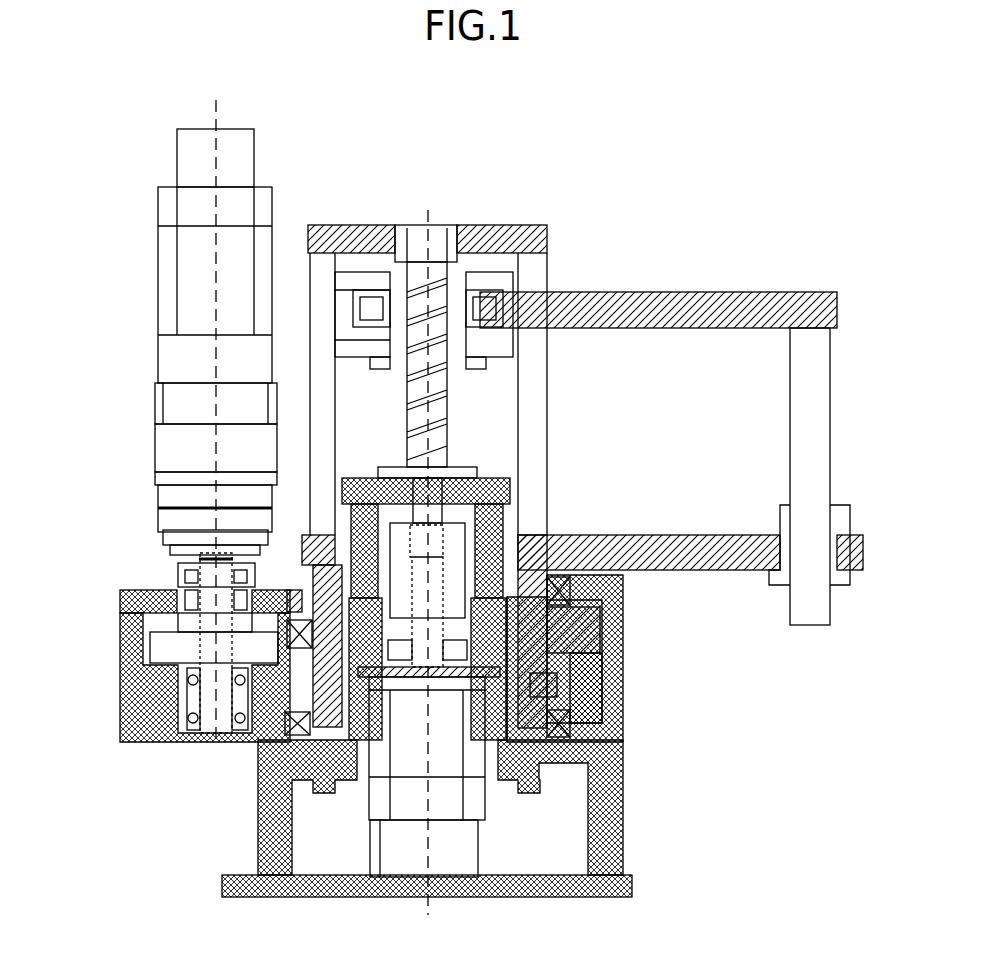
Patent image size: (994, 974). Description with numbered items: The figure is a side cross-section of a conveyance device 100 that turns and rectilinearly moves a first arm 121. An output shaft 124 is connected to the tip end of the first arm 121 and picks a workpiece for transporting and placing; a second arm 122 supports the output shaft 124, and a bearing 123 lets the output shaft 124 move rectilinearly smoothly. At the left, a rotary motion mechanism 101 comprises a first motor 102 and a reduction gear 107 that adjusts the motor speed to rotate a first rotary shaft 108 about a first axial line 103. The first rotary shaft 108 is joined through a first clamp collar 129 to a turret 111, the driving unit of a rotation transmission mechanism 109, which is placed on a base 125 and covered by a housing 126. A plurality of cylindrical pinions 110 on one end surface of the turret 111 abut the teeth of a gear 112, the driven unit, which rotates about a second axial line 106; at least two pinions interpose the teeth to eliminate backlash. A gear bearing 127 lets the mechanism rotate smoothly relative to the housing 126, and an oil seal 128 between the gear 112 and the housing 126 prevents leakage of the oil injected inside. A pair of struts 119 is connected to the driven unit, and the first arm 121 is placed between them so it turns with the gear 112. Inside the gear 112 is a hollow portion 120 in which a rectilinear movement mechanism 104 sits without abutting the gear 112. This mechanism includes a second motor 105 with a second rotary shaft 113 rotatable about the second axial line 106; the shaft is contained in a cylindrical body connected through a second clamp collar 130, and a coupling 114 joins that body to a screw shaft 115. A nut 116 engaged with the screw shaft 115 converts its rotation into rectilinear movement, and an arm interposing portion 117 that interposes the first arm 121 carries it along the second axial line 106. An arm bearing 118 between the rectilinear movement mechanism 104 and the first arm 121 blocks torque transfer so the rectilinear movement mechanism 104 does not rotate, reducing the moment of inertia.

The conveyance device 100 is at (656, 268).
The rotary motion mechanism 101 is at (157, 157).
The first motor 102 is at (170, 213).
The first axial line 103 is at (215, 300).
The rectilinear movement mechanism 104 is at (487, 838).
The second motor 105 is at (403, 858).
The second axial line 106 is at (428, 835).
The reduction gear 107 is at (170, 445).
The first rotary shaft 108 is at (238, 598).
The rotation transmission mechanism 109 is at (125, 640).
The cylindrical pinions 110 is at (140, 637).
The turret 111 is at (187, 640).
The gear 112 is at (177, 580).
The second rotary shaft 113 is at (433, 633).
The coupling 114 is at (447, 562).
The screw shaft 115 is at (438, 403).
The nut 116 is at (455, 262).
The arm interposing portion 117 is at (452, 297).
The arm bearing 118 is at (483, 307).
The struts 119 is at (532, 450).
The hollow portion 120 is at (348, 690).
The first arm 121 is at (805, 302).
The second arm 122 is at (858, 548).
The bearing 123 is at (835, 512).
The output shaft 124 is at (812, 447).
The base 125 is at (605, 800).
The housing 126 is at (602, 737).
The gear bearing 127 is at (530, 687).
The oil seal 128 is at (573, 594).
The first clamp collar 129 is at (180, 612).
The second clamp collar 130 is at (457, 650).